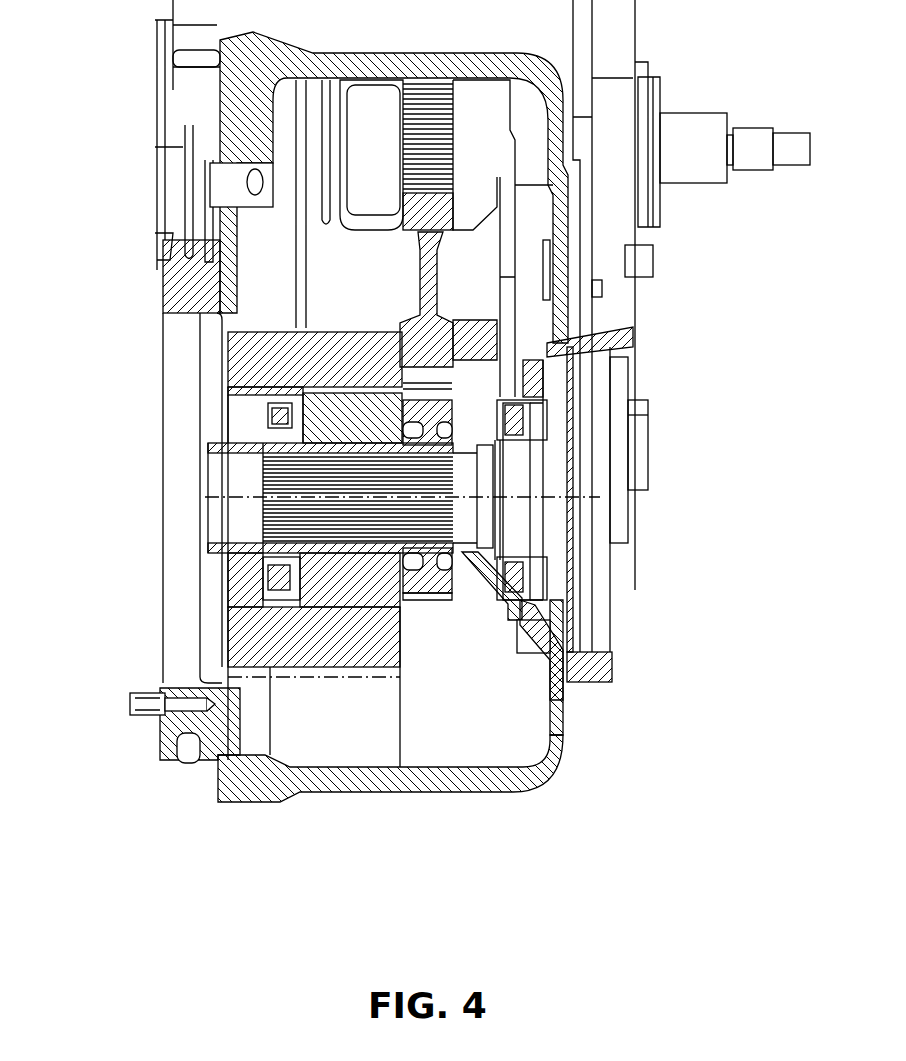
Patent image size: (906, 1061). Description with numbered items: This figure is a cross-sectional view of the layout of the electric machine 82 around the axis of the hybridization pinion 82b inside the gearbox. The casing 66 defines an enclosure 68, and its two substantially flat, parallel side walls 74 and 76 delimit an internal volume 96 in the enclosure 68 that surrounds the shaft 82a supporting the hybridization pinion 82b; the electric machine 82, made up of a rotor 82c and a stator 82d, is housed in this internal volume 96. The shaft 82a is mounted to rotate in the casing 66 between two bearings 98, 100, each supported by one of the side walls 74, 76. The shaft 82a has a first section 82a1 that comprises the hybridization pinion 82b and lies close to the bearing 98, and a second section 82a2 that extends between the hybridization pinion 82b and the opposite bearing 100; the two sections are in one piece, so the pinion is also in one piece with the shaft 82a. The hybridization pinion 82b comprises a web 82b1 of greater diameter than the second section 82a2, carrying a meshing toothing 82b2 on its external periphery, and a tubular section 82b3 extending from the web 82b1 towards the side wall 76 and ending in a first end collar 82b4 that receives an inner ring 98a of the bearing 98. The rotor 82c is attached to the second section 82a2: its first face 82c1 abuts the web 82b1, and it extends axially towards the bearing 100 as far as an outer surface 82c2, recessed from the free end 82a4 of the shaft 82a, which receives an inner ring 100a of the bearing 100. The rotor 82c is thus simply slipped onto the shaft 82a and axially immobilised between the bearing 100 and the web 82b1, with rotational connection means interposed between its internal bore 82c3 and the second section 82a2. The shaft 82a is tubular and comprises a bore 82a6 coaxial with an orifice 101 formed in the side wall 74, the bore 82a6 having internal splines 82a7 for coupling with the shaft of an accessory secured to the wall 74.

The casing 66 is at (405, 796).
The enclosure 68 is at (515, 705).
The side wall 74 is at (177, 295).
The side wall 76 is at (590, 675).
The electric machine 82 is at (410, 386).
The shaft 82a is at (373, 556).
The first section 82a1 is at (425, 560).
The second section 82a2 is at (340, 553).
The free end 82a4 is at (262, 505).
The bore 82a6 is at (230, 520).
The internal splines 82a7 is at (280, 580).
The hybridization pinion 82b is at (442, 598).
The web 82b1 is at (465, 568).
The meshing toothing 82b2 is at (443, 397).
The tubular section 82b3 is at (573, 683).
The first end collar 82b4 is at (527, 462).
The rotor 82c is at (292, 432).
The first face 82c1 is at (400, 607).
The outer surface 82c2 is at (293, 563).
The internal bore 82c3 is at (318, 590).
The stator 82d is at (232, 354).
The internal volume 96 is at (330, 678).
The bearing 98 is at (533, 580).
The inner ring 98a is at (533, 427).
The bearing 100 is at (240, 600).
The inner ring 100a is at (328, 432).
The orifice 101 is at (272, 570).